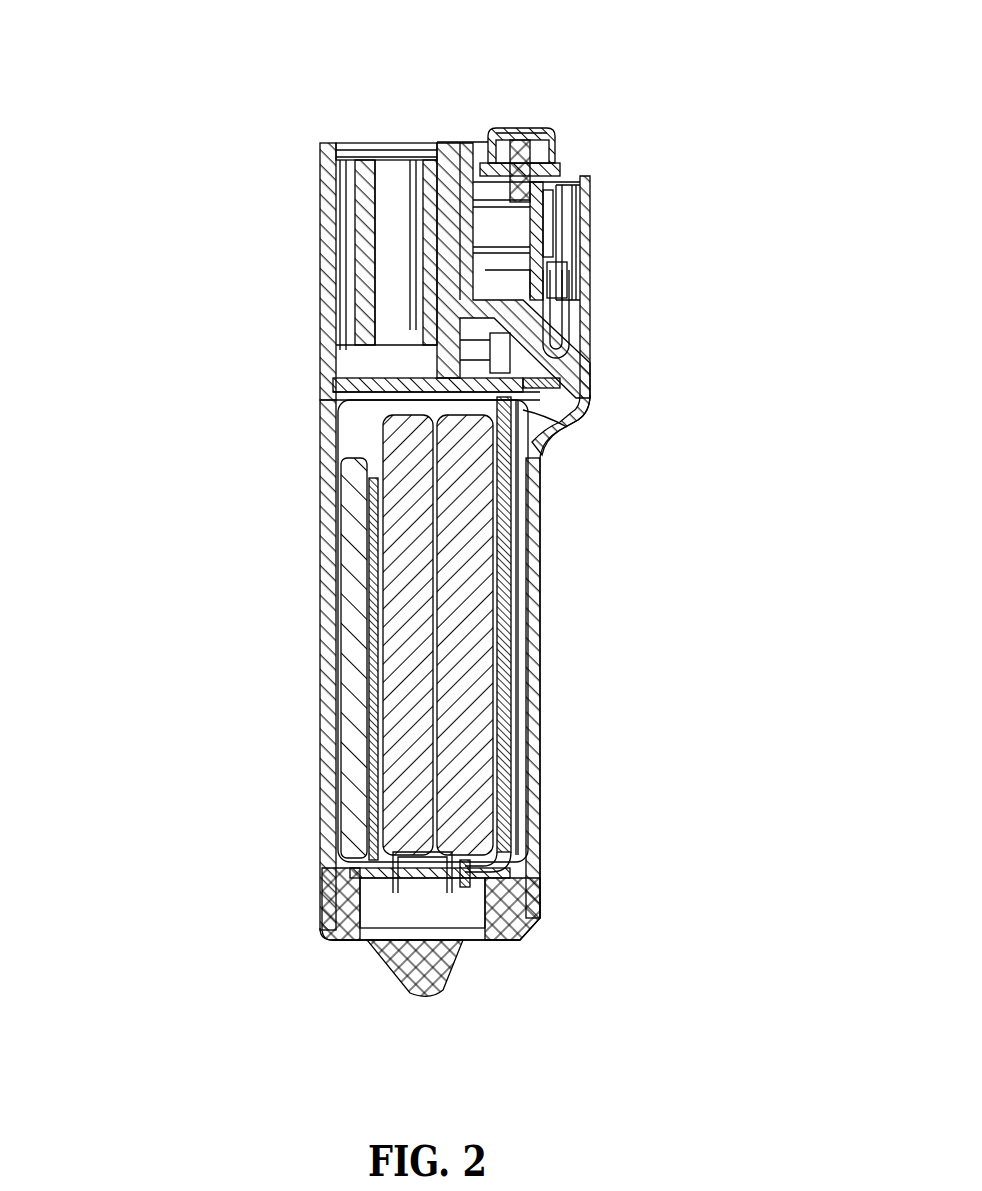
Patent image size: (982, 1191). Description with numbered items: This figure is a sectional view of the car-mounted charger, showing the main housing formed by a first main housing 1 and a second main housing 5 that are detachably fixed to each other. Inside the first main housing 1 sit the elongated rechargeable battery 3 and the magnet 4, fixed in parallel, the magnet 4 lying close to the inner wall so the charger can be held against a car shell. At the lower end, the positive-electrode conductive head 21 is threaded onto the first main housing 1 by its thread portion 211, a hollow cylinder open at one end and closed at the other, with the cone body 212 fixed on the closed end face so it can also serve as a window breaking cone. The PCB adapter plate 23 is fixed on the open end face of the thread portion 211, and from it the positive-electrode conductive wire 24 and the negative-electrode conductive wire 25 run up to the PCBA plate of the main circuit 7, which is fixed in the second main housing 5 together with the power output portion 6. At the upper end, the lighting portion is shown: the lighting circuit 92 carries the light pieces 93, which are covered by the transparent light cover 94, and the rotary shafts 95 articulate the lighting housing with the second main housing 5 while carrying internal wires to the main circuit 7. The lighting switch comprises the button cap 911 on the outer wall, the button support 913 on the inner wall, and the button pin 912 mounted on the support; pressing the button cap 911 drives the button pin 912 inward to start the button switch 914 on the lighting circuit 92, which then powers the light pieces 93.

The first main housing 1 is at (318, 543).
The rechargeable battery 3 is at (453, 614).
The magnet 4 is at (350, 755).
The second main housing 5 is at (314, 193).
The power output portion 6 is at (360, 272).
The main circuit 7 is at (375, 378).
The positive-electrode conductive head 21 is at (170, 975).
The thread portion 211 is at (352, 905).
The cone body 212 is at (411, 962).
The PCB adapter plate 23 is at (352, 872).
The positive-electrode conductive wire 24 is at (509, 827).
The negative-electrode conductive wire 25 is at (524, 730).
The lighting circuit 92 is at (545, 285).
The light pieces 93 is at (557, 238).
The light cover 94 is at (598, 262).
The rotary shafts 95 is at (567, 337).
The button cap 911 is at (548, 130).
The button pin 912 is at (515, 130).
The button support 913 is at (548, 160).
The button switch 914 is at (542, 176).